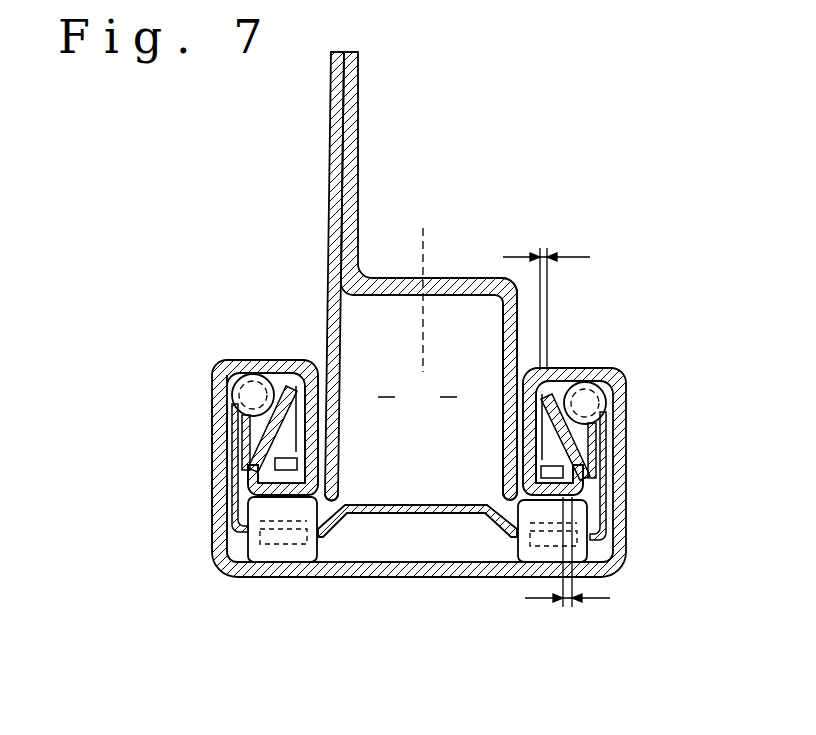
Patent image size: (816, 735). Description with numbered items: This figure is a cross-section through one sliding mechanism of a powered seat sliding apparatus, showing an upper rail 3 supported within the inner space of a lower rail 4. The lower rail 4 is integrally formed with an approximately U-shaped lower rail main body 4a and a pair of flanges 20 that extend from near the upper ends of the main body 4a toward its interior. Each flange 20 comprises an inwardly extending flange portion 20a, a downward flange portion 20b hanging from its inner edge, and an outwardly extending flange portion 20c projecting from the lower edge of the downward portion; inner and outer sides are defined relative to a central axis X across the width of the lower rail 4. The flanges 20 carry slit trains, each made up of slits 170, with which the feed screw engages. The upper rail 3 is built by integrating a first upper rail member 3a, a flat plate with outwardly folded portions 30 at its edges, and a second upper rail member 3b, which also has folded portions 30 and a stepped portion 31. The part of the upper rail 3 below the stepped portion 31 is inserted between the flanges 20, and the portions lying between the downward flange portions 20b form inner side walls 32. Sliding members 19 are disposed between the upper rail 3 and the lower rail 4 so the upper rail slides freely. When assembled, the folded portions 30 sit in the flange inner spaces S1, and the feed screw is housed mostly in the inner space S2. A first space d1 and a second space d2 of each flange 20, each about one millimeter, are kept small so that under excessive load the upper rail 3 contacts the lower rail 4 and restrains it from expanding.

The upper rail 3 is at (380, 278).
The first upper rail member 3a is at (331, 194).
The second upper rail member 3b is at (358, 163).
The stepped portion 31 is at (462, 278).
The inner side walls 32 is at (421, 476).
The lower rail 4 is at (418, 493).
The lower rail main body 4a is at (217, 522).
The sliding members 19 is at (406, 507).
The flanges 20 is at (423, 395).
The inwardly extending flange portions 20a is at (568, 368).
The downward flange portions 20b is at (530, 402).
The outwardly extending flange portions 20c is at (578, 482).
The folded portions 30 is at (592, 440).
The slit 170 is at (420, 401).
The central axis X is at (423, 285).
The flange inner spaces S1 is at (284, 440).
The inner space S2 is at (417, 398).
The first space d1 is at (567, 569).
The second space d2 is at (546, 294).